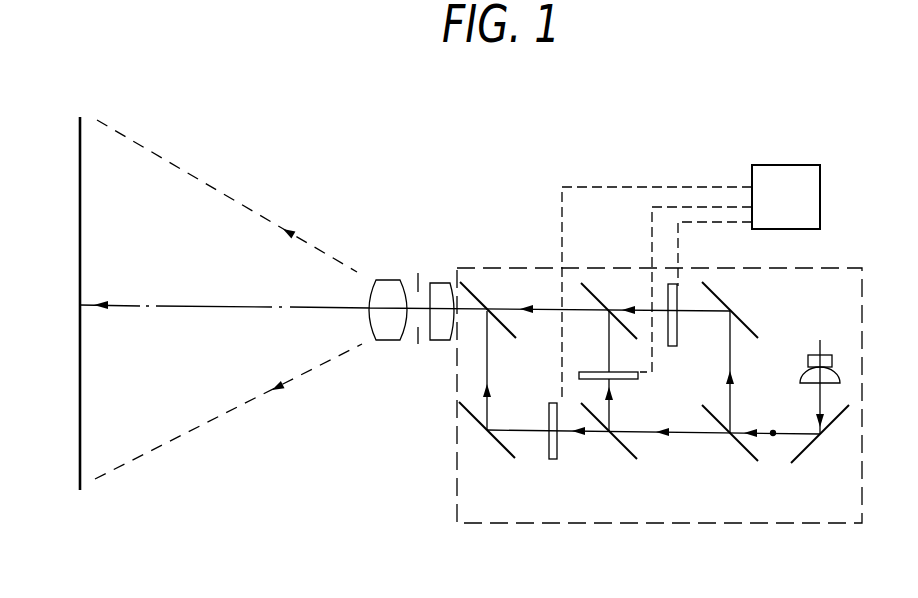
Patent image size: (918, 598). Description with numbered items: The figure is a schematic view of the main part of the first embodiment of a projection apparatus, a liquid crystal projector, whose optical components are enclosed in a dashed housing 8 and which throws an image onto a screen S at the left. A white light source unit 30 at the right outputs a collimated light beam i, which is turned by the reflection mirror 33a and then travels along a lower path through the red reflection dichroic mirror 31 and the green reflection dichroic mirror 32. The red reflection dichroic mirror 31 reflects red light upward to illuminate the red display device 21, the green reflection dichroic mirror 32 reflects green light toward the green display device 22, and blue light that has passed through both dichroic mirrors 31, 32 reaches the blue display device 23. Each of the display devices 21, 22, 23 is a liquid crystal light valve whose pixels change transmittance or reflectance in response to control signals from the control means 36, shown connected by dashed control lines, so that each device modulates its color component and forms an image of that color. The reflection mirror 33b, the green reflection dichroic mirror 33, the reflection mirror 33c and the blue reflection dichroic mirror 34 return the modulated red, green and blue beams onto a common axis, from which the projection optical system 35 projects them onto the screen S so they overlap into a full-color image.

The screen S is at (78, 289).
The optical unit housing 8 is at (840, 268).
The red display device 21 is at (677, 297).
The green display device 22 is at (628, 380).
The blue display device 23 is at (553, 460).
The white light source unit 30 is at (841, 376).
The red reflection dichroic mirror 31 is at (743, 453).
The green reflection dichroic mirror 32 is at (627, 452).
The green reflection dichroic mirror 33 is at (592, 287).
The reflection mirror 33a is at (803, 453).
The reflection mirror 33b is at (752, 330).
The reflection mirror 33c is at (503, 453).
The blue reflection dichroic mirror 34 is at (468, 286).
The projection optical system 35 is at (457, 344).
The control means 36 is at (800, 148).
The light beam i is at (773, 419).